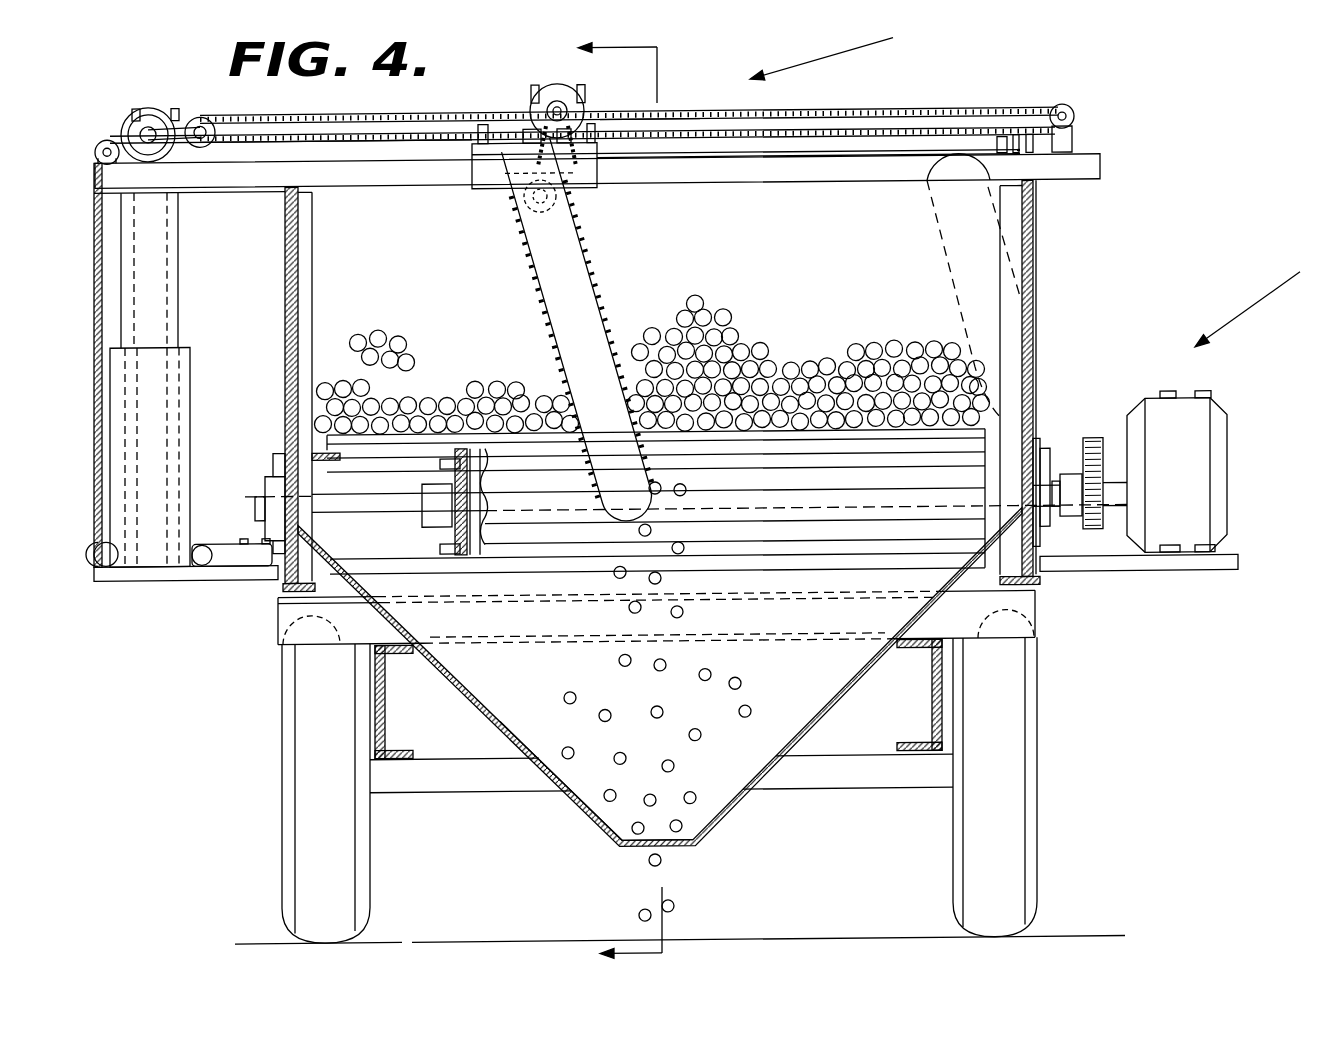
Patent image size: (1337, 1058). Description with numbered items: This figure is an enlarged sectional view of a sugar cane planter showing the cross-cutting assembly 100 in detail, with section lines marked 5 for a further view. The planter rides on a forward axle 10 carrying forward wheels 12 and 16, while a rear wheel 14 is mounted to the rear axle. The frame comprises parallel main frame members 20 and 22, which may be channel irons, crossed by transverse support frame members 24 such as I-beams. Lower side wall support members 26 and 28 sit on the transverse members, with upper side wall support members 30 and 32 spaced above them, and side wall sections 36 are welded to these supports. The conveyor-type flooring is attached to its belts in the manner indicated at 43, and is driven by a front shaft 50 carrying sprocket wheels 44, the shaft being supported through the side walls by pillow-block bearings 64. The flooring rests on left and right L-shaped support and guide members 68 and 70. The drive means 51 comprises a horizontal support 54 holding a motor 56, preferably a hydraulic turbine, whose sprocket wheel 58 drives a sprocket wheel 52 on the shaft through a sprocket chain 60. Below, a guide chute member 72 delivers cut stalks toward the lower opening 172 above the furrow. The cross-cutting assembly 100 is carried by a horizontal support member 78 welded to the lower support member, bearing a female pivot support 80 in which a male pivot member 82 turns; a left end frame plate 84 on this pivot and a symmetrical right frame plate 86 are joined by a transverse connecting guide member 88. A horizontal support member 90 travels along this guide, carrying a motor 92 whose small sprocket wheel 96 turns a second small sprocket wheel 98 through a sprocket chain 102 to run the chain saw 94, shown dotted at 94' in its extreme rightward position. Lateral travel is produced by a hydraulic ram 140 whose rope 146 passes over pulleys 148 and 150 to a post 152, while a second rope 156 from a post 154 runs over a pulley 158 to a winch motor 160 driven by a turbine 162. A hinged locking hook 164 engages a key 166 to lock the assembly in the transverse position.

The section line 5 is at (638, 494).
The forward axle 10 is at (802, 790).
The forward wheel 12 is at (282, 828).
The rear wheel 14 is at (732, 815).
The forward wheel 16 is at (1040, 825).
The main frame member 20 is at (386, 715).
The main frame member 22 is at (930, 712).
The support frame member 24 is at (1038, 630).
The lower side wall support member 26 is at (284, 586).
The lower side wall support member 28 is at (1040, 590).
The upper side wall support member 30 is at (314, 195).
The upper side wall support member 32 is at (1037, 200).
The side wall section 36 is at (1037, 250).
The mode of attachment 43 is at (440, 462).
The sprocket wheel 44 is at (452, 520).
The front sprocket wheel driving shaft 50 is at (375, 512).
The drive means 51 is at (1266, 298).
The sprocket wheel 52 is at (1072, 478).
The horizontal support 54 is at (1195, 576).
The motor 56 is at (1228, 500).
The sprocket wheel 58 is at (1115, 487).
The sprocket chain 60 is at (1093, 442).
The bearing 64 is at (265, 473).
The L-shaped support and guide member 68 is at (330, 450).
The L-shaped support and guide member 70 is at (975, 370).
The guide chute member 72 is at (578, 805).
The horizontal support member 78 is at (155, 577).
The female pivot support 80 is at (190, 390).
The male pivot member 82 is at (180, 290).
The left end frame plate 84 is at (180, 200).
The right frame plate 86 is at (1105, 170).
The transverse connecting guide member 88 is at (579, 383).
The horizontal support member 90 is at (597, 185).
The motor 92 is at (531, 95).
The chain saw 94 is at (553, 332).
The chain saw in extreme rightward position 94' is at (941, 285).
The small sprocket wheel 96 is at (562, 112).
The second small sprocket wheel 98 is at (530, 195).
The cross-cutting assembly 100 is at (846, 49).
The sprocket chain 102 is at (746, 150).
The hydraulic ram 140 is at (230, 542).
The rope 146 is at (305, 140).
The pulley 148 is at (95, 568).
The pulley 150 is at (100, 140).
The post 152 is at (472, 145).
The post 154 is at (648, 112).
The rope 156 is at (716, 140).
The pulley 158 is at (1078, 122).
The winch motor 160 is at (214, 120).
The turbine 162 is at (145, 103).
The hinged locking hook 164 is at (1020, 125).
The key 166 is at (995, 148).
The lower opening 172 is at (645, 848).